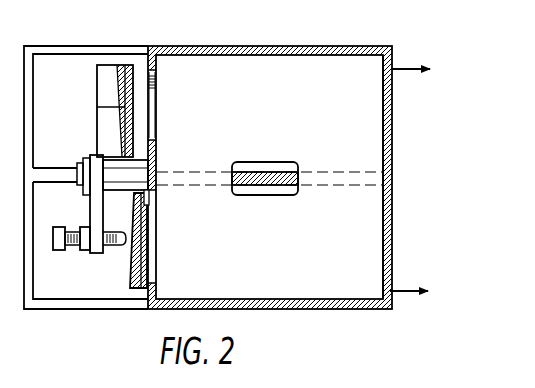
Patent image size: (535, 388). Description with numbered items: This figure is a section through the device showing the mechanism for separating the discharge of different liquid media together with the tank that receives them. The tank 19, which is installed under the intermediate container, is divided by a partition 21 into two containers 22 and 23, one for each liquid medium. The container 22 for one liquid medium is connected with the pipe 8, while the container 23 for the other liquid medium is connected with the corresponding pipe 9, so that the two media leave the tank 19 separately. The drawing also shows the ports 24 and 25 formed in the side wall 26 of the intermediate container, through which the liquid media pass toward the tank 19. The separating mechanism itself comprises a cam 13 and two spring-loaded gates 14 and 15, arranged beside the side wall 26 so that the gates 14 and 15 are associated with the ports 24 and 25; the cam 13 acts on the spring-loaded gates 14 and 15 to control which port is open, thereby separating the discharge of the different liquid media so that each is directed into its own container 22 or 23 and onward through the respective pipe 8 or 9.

The pipe 8 is at (405, 68).
The pipe 9 is at (398, 290).
The cam 13 is at (92, 211).
The spring-loaded gate 14 is at (117, 90).
The spring-loaded gate 15 is at (128, 271).
The tank 19 is at (338, 47).
The partition 21 is at (270, 186).
The container 22 is at (285, 74).
The container 23 is at (362, 210).
The port 24 is at (152, 124).
The port 25 is at (152, 252).
The side wall 26 is at (155, 74).